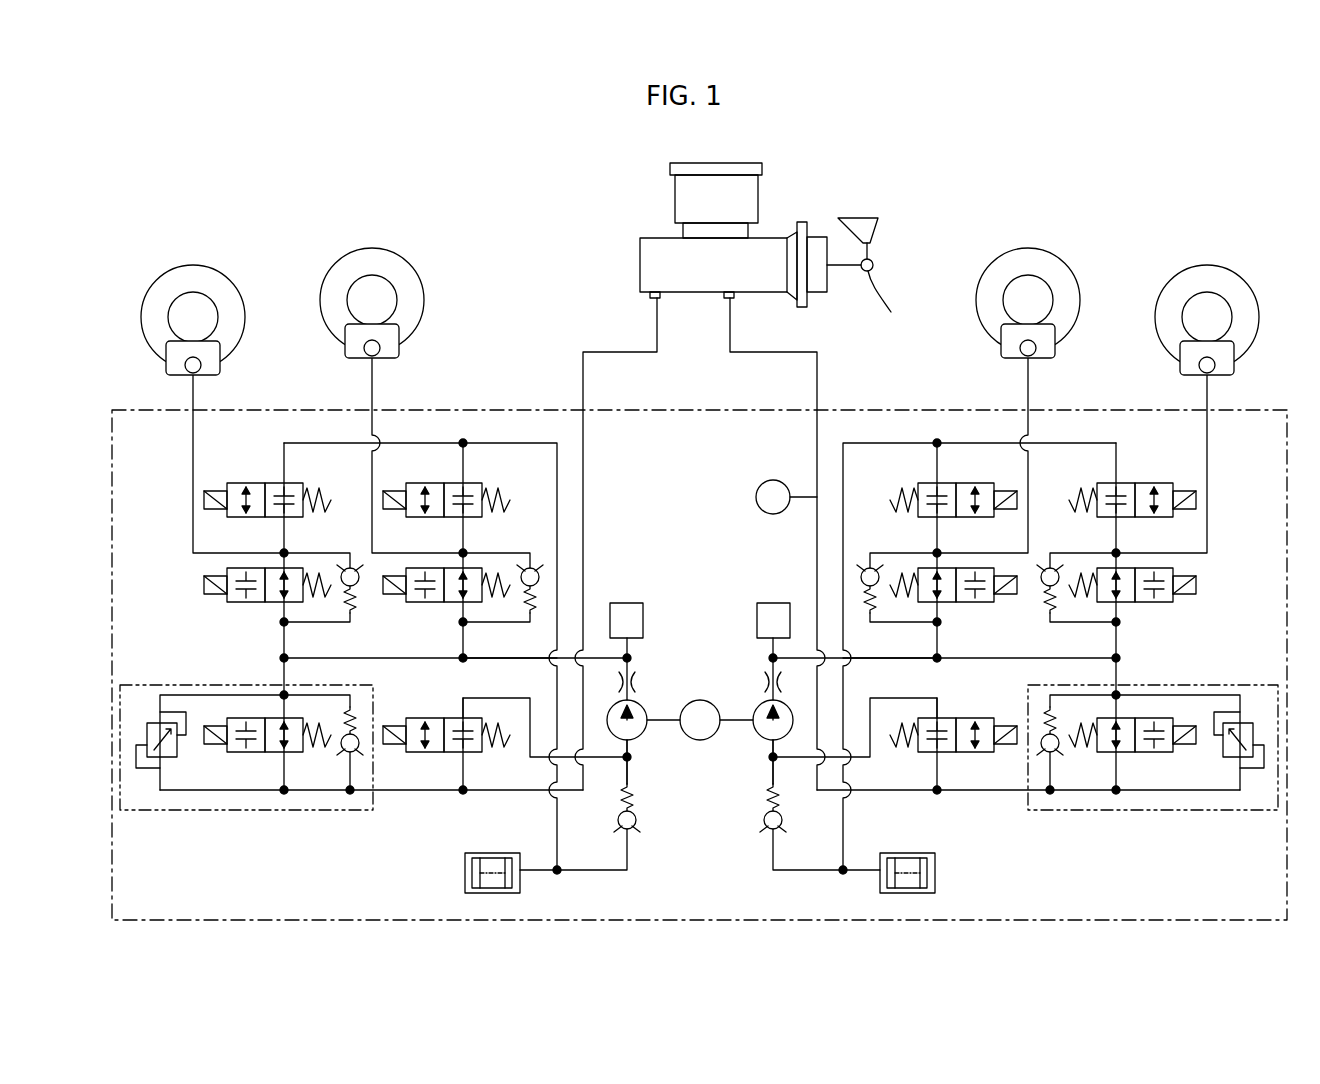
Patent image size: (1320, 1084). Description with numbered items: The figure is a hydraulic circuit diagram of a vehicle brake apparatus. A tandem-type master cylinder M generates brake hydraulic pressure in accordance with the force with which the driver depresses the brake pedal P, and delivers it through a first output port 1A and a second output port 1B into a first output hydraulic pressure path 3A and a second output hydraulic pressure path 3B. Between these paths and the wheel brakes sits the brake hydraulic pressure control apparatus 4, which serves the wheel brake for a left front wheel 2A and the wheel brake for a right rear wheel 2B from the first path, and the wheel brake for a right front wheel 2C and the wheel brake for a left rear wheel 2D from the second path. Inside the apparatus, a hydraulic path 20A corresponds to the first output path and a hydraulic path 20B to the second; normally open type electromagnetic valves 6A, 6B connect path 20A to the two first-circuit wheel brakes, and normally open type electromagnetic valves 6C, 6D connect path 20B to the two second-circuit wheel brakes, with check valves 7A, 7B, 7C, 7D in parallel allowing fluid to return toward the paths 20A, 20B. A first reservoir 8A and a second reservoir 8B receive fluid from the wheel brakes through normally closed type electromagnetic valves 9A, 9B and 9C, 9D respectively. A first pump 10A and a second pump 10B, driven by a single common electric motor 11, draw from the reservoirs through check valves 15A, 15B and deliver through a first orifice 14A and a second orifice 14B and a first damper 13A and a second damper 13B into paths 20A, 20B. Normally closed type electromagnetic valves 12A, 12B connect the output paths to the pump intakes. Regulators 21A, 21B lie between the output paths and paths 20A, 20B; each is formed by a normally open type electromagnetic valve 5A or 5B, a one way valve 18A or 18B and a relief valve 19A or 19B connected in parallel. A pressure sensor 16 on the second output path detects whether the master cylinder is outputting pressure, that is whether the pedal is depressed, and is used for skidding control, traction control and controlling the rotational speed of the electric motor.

The wheel brake for a left front wheel 2A is at (189, 264).
The wheel brake for a right rear wheel 2B is at (370, 246).
The wheel brake for a right front wheel 2C is at (1210, 262).
The wheel brake for a left rear wheel 2D is at (1030, 246).
The master cylinder M is at (640, 252).
The brake pedal P is at (893, 300).
The first output port 1A is at (650, 300).
The second output port 1B is at (736, 300).
The first output hydraulic pressure path 3A is at (583, 380).
The second output hydraulic pressure path 3B is at (817, 380).
The brake hydraulic pressure control apparatus 4 is at (430, 408).
The normally closed type electromagnetic valve 9A is at (244, 482).
The normally closed type electromagnetic valve 9B is at (478, 482).
The normally closed type electromagnetic valve 9C is at (1145, 482).
The normally closed type electromagnetic valve 9D is at (975, 482).
The pressure sensor 16 is at (773, 480).
The check valve 7A is at (360, 574).
The check valve 7B is at (540, 574).
The check valve 7C is at (1040, 574).
The check valve 7D is at (860, 574).
The first damper 13A is at (627, 603).
The second damper 13B is at (773, 603).
The normally open type electromagnetic valve 6A is at (258, 603).
The normally open type electromagnetic valve 6B is at (436, 603).
The normally open type electromagnetic valve 6C is at (1160, 603).
The normally open type electromagnetic valve 6D is at (966, 603).
The relief valve 19A is at (152, 722).
The relief valve 19B is at (1244, 722).
The normally closed type electromagnetic valve 12A is at (421, 718).
The normally closed type electromagnetic valve 12B is at (965, 718).
The first orifice 14A is at (638, 685).
The second orifice 14B is at (762, 685).
The hydraulic path 20A is at (496, 660).
The hydraulic path 20B is at (1055, 658).
The normally open type electromagnetic valve 5A is at (244, 755).
The normally open type electromagnetic valve 5B is at (1156, 755).
The one way valve 18A is at (359, 747).
The one way valve 18B is at (1041, 747).
The first reservoir 8A is at (472, 850).
The second reservoir 8B is at (928, 850).
The first pump 10A is at (640, 745).
The second pump 10B is at (760, 745).
The electric motor 11 is at (700, 740).
The check valve 15A is at (638, 830).
The check valve 15B is at (762, 830).
The regulator 21A is at (205, 812).
The regulator 21B is at (1157, 812).